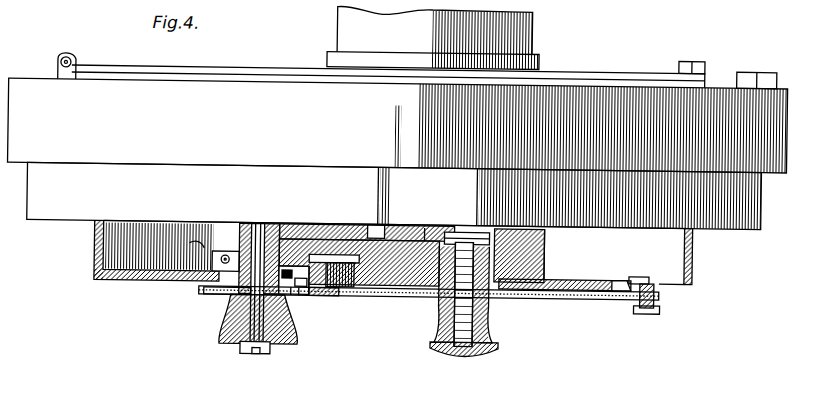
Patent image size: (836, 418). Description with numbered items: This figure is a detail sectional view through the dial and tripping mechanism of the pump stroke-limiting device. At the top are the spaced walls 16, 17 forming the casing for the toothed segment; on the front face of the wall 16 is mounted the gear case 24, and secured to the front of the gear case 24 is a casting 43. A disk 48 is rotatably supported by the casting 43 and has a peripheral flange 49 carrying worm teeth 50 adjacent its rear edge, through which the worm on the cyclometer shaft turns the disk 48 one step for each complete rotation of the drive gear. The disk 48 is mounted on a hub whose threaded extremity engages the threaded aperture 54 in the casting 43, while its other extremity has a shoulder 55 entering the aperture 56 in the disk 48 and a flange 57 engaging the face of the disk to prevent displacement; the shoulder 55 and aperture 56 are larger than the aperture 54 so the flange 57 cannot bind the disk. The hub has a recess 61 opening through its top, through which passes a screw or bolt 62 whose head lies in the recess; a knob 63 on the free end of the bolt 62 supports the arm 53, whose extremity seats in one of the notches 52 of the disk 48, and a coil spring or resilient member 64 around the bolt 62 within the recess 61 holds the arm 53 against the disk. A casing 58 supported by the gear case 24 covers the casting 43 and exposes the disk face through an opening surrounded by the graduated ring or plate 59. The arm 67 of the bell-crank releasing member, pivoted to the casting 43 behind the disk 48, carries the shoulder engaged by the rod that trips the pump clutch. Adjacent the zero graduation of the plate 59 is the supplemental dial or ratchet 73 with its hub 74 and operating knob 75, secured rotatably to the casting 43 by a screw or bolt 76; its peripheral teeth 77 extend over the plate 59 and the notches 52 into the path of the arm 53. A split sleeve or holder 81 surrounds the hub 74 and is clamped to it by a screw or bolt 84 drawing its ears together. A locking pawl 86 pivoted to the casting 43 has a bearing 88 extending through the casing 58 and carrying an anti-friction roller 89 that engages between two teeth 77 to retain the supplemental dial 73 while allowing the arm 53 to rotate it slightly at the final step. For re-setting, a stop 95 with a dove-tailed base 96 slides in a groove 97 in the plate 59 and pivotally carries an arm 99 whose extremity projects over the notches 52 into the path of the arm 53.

The wall 16 is at (145, 162).
The wall 17 is at (198, 71).
The gear case 24 is at (62, 219).
The casting 43 is at (530, 230).
The disk 48 is at (560, 292).
The peripheral flange 49 is at (620, 276).
The worm teeth 50 is at (618, 270).
The notches 52 is at (380, 291).
The arm 53 is at (440, 262).
The aperture 54 is at (458, 226).
The shoulder 55 is at (440, 268).
The aperture 56 is at (522, 292).
The flange 57 is at (503, 293).
The casing 58 is at (95, 277).
The ring or plate 59 is at (662, 288).
The recess 61 is at (482, 262).
The screw or bolt 62 is at (440, 310).
The operating handle or knob 63 is at (465, 352).
The resilient member 64 is at (485, 262).
The arm of releasing member 67 is at (400, 222).
The supplemental dial or ratchet 73 is at (232, 292).
The hub 74 is at (256, 285).
The operating knob or handle 75 is at (226, 336).
The screw or bolt 76 is at (254, 338).
The peripheral teeth 77 is at (215, 288).
The split sleeve or holder 81 is at (283, 258).
The screw or bolt 84 is at (226, 252).
The locking pawl 86 is at (312, 258).
The bearing 88 is at (228, 278).
The anti-friction roller 89 is at (227, 294).
The stop 95 is at (656, 302).
The dove-tailed base 96 is at (652, 275).
The groove 97 is at (300, 262).
The arm 99 is at (632, 291).